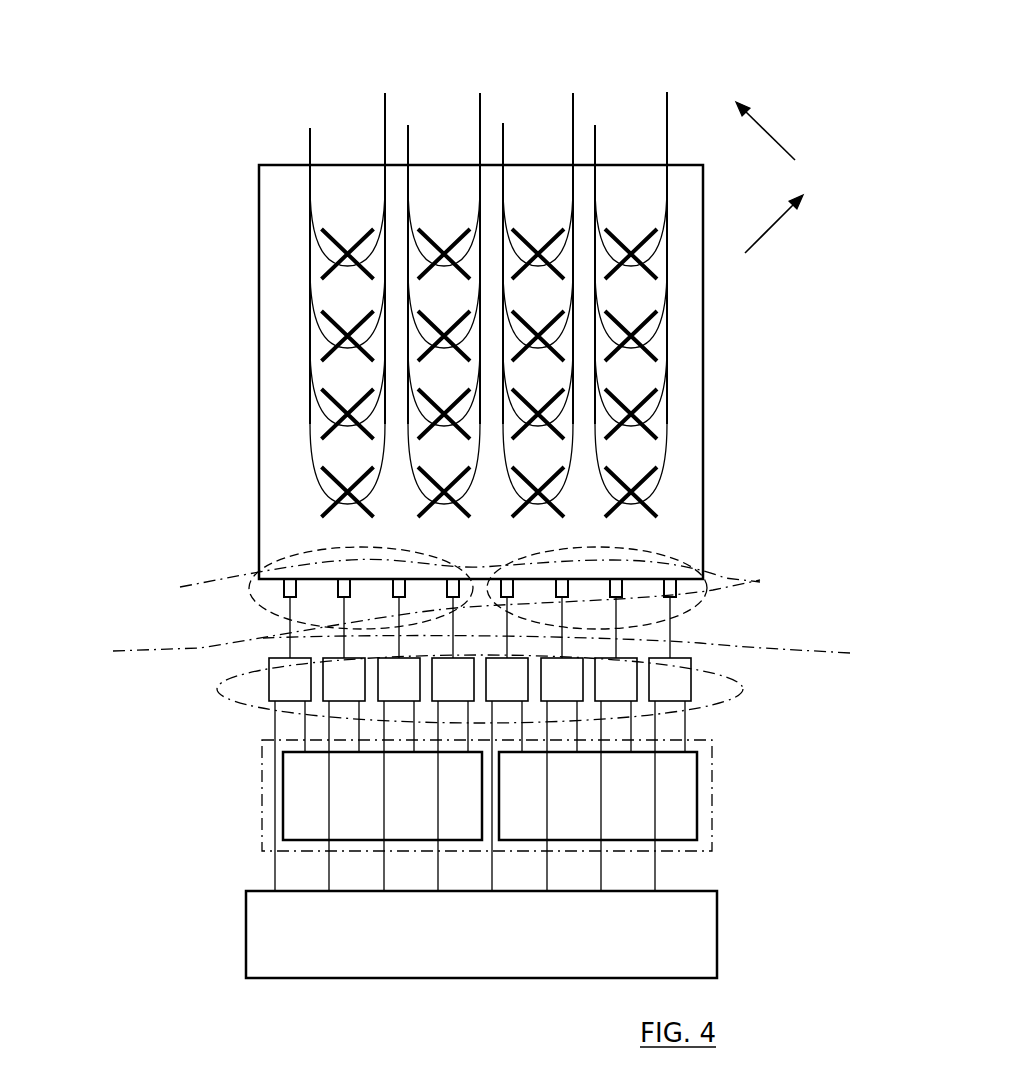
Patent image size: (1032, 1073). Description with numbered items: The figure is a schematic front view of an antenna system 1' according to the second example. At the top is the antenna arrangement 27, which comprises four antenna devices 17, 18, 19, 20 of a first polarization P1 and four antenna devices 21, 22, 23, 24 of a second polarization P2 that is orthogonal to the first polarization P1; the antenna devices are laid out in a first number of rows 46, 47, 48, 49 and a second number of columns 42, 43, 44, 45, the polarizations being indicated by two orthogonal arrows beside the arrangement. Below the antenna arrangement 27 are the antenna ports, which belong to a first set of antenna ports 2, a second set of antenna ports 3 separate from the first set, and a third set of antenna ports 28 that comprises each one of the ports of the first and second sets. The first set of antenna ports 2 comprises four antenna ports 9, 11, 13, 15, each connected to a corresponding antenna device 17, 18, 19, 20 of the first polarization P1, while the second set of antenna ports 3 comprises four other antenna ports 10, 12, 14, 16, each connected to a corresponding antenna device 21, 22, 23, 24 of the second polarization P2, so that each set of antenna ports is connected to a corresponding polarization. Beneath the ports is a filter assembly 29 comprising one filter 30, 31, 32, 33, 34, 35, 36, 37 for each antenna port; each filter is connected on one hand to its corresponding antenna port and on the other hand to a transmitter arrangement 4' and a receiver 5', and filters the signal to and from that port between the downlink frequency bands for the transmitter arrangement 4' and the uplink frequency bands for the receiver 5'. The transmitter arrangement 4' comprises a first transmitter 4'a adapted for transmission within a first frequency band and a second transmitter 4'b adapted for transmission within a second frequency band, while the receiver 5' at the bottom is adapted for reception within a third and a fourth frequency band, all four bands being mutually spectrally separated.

The antenna system 1' is at (165, 44).
The antenna arrangement 27 is at (278, 222).
The antenna device 17 is at (301, 253).
The antenna device 18 is at (412, 258).
The antenna device 19 is at (504, 258).
The antenna device 20 is at (596, 258).
The antenna device 21 is at (379, 241).
The antenna device 22 is at (477, 241).
The antenna device 23 is at (569, 241).
The antenna device 24 is at (667, 242).
The column of antenna devices 42 is at (350, 209).
The column of antenna devices 43 is at (442, 209).
The column of antenna devices 44 is at (536, 209).
The column of antenna devices 45 is at (632, 209).
The row of antenna devices 46 is at (283, 252).
The row of antenna devices 47 is at (285, 338).
The row of antenna devices 48 is at (283, 413).
The row of antenna devices 49 is at (288, 490).
The antenna port 9 is at (290, 590).
The antenna port 10 is at (345, 580).
The antenna port 11 is at (399, 579).
The antenna port 12 is at (453, 579).
The antenna port 13 is at (508, 579).
The antenna port 14 is at (562, 579).
The antenna port 15 is at (615, 580).
The antenna port 16 is at (670, 590).
The first set of antenna ports 2 is at (421, 612).
The second set of antenna ports 3 is at (565, 651).
The third set of antenna ports 28 is at (533, 600).
The filter assembly 29 is at (722, 697).
The filter 30 is at (274, 694).
The filter 31 is at (328, 694).
The filter 32 is at (383, 694).
The filter 33 is at (437, 694).
The filter 34 is at (491, 694).
The filter 35 is at (546, 694).
The filter 36 is at (600, 694).
The filter 37 is at (654, 694).
The transmitter arrangement 4' is at (556, 795).
The first transmitter 4'a is at (322, 796).
The second transmitter 4'b is at (681, 801).
The receiver 5' is at (481, 934).
The first polarization P1 is at (775, 227).
The second polarization P2 is at (778, 142).